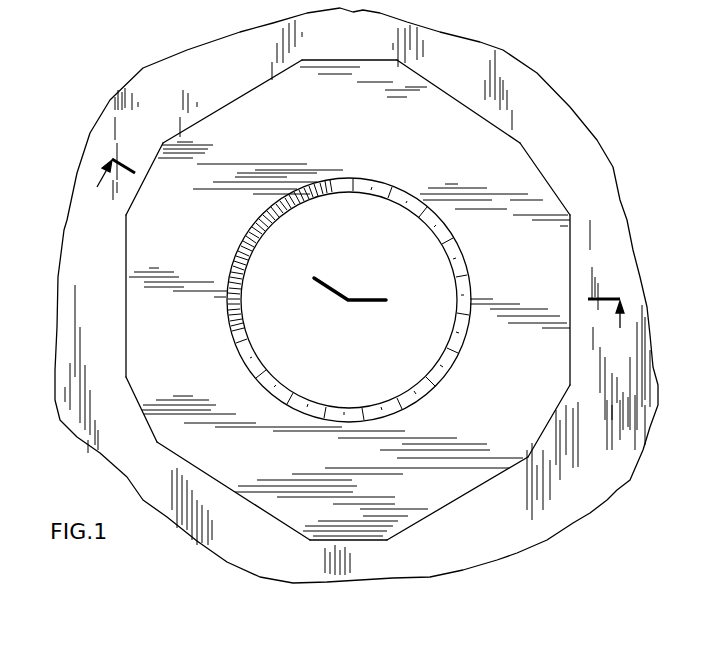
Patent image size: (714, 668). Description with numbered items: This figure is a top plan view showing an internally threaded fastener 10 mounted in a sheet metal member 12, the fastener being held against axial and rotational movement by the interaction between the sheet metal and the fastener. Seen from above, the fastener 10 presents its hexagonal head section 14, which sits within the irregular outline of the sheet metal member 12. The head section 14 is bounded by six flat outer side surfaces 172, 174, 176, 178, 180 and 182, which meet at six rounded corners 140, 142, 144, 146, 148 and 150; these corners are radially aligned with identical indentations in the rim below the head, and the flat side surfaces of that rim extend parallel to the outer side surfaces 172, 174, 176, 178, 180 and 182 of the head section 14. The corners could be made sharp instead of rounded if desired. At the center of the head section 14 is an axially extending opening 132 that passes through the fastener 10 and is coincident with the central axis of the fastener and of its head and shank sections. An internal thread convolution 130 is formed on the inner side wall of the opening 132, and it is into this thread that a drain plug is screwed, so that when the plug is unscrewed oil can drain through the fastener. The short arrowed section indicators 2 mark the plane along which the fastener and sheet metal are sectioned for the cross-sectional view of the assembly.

The internally threaded fastener 10 is at (334, 291).
The sheet metal member 12 is at (498, 68).
The hexagonal head section 14 is at (319, 302).
The section line 2- 2 is at (355, 253).
The internal thread convolution 130 is at (252, 360).
The axially extending opening 132 is at (300, 372).
The rounded corner 140 is at (362, 59).
The rounded corner 142 is at (148, 167).
The rounded corner 144 is at (146, 423).
The rounded corner 146 is at (363, 541).
The rounded corner 148 is at (553, 425).
The rounded corner 150 is at (562, 193).
The outer side surface 172 is at (213, 113).
The outer side surface 174 is at (126, 313).
The outer side surface 176 is at (228, 492).
The outer side surface 178 is at (458, 499).
The outer side surface 180 is at (570, 263).
The outer side surface 182 is at (503, 122).